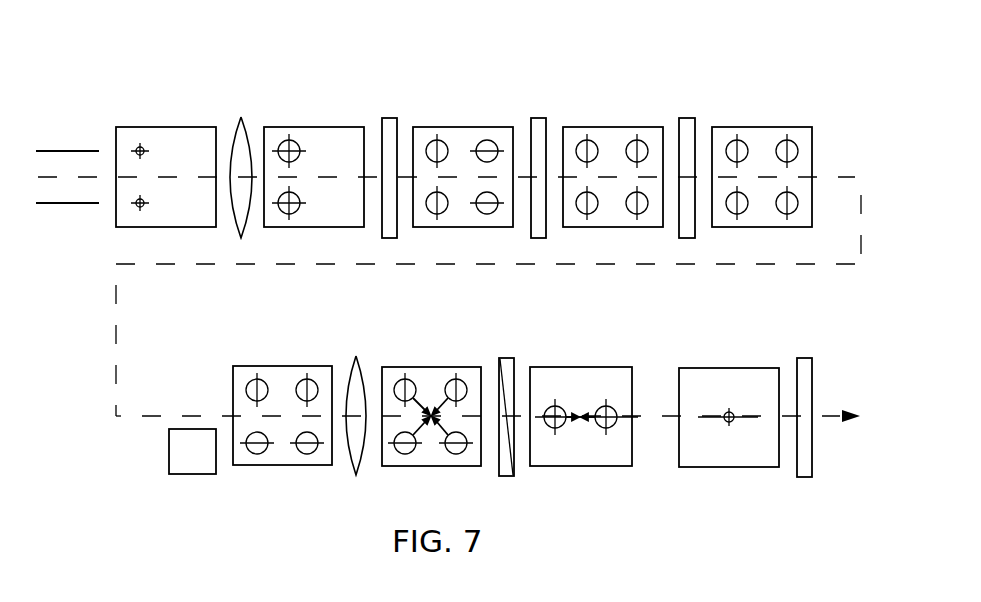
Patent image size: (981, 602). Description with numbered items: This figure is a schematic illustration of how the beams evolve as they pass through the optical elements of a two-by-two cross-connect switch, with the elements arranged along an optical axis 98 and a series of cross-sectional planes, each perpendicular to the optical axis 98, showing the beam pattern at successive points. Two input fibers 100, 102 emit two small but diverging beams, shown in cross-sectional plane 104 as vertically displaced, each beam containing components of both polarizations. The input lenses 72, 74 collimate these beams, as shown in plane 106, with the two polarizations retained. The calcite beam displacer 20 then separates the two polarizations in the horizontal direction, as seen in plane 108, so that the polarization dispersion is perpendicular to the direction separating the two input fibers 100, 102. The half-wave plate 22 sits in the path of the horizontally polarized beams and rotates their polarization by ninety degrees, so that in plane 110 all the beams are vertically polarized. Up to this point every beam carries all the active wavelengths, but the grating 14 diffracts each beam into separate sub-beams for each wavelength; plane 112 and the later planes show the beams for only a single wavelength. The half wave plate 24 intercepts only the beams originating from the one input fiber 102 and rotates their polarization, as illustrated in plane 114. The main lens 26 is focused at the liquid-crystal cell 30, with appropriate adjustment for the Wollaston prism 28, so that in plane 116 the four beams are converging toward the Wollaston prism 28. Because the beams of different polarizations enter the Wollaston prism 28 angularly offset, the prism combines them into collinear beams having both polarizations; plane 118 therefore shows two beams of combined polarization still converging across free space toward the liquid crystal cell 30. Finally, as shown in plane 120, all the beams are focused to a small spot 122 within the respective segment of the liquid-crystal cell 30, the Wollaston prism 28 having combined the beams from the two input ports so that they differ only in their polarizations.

The grating 14 is at (690, 122).
The calcite beam displacer 20 is at (388, 122).
The half-wave plate 22 is at (538, 122).
The half wave plate 24 is at (192, 462).
The main lens 26 is at (357, 365).
The Wollaston prism 28 is at (506, 362).
The liquid-crystal cell 30 is at (803, 365).
The input lens 72 is at (270, 141).
The input lens 74 is at (242, 122).
The optical axis 98 is at (90, 176).
The input fiber 100 is at (77, 151).
The input fiber 102 is at (83, 203).
The cross-sectional plane 104 is at (159, 132).
The plane 106 is at (322, 128).
The plane 108 is at (463, 133).
The plane 110 is at (612, 134).
The plane 112 is at (762, 135).
The plane 114 is at (273, 372).
The plane 116 is at (435, 370).
The plane 118 is at (580, 372).
The plane 120 is at (728, 372).
The small spot 122 is at (727, 424).